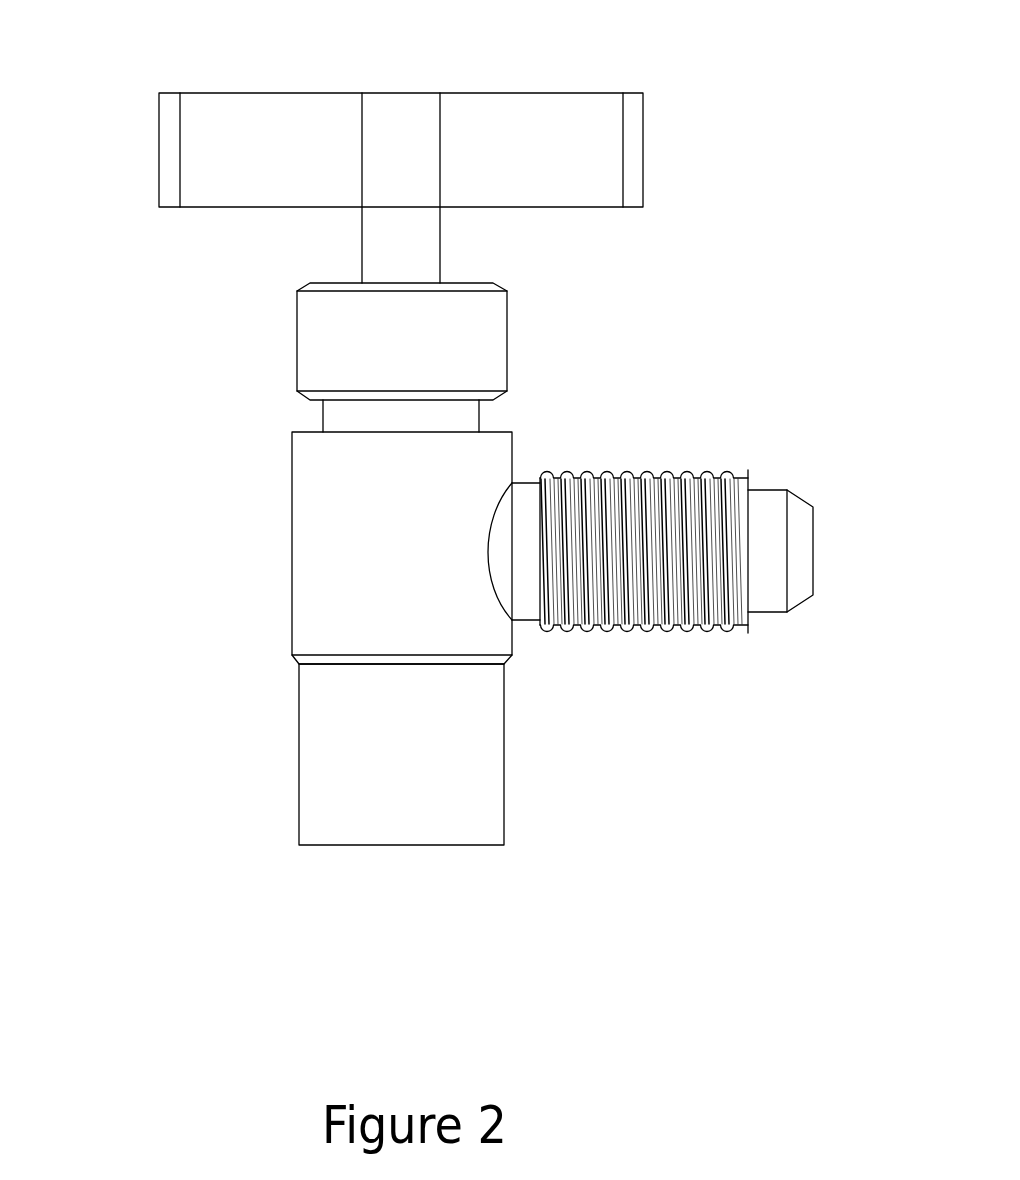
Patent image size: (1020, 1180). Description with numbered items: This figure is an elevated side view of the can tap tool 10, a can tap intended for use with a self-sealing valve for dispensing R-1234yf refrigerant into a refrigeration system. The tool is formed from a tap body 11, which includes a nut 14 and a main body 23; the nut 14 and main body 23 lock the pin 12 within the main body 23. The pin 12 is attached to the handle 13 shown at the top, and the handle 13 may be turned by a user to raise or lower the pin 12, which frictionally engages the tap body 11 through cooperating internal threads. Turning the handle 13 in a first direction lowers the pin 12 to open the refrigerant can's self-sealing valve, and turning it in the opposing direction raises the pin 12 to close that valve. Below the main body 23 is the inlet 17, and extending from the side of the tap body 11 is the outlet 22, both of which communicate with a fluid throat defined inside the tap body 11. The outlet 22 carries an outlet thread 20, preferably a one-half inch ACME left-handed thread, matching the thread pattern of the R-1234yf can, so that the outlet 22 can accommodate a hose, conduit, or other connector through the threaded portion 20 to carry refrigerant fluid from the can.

The can tap tool 10 is at (172, 907).
The tap body 11 is at (292, 528).
The pin 12 is at (362, 263).
The handle 13 is at (290, 93).
The nut 14 is at (297, 378).
The inlet 17 is at (443, 845).
The outlet thread 20 is at (583, 470).
The outlet 22 is at (813, 548).
The main body 23 is at (330, 593).